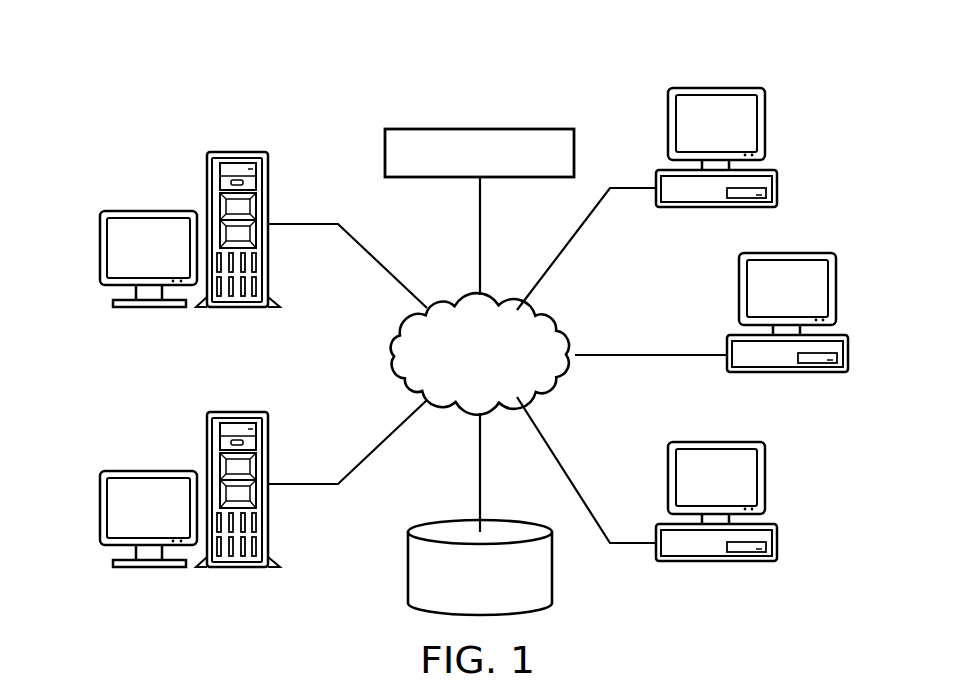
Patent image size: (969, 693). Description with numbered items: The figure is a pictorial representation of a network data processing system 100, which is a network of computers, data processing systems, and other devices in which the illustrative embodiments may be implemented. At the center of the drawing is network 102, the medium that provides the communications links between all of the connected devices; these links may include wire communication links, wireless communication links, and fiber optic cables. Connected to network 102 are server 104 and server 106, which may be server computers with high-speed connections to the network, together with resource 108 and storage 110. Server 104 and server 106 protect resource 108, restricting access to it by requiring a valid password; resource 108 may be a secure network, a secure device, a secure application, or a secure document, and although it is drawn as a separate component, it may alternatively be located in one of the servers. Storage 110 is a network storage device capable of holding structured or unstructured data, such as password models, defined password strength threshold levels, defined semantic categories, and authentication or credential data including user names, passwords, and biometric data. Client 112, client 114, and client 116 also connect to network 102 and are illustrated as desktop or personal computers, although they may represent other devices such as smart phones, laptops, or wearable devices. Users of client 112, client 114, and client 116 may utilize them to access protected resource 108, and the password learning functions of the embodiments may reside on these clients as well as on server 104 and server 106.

The network data processing system 100 is at (315, 82).
The network 102 is at (453, 300).
The server 104 is at (100, 248).
The server 106 is at (100, 505).
The resource 108 is at (468, 129).
The storage 110 is at (408, 567).
The client 112 is at (777, 179).
The client 114 is at (847, 363).
The client 116 is at (777, 552).